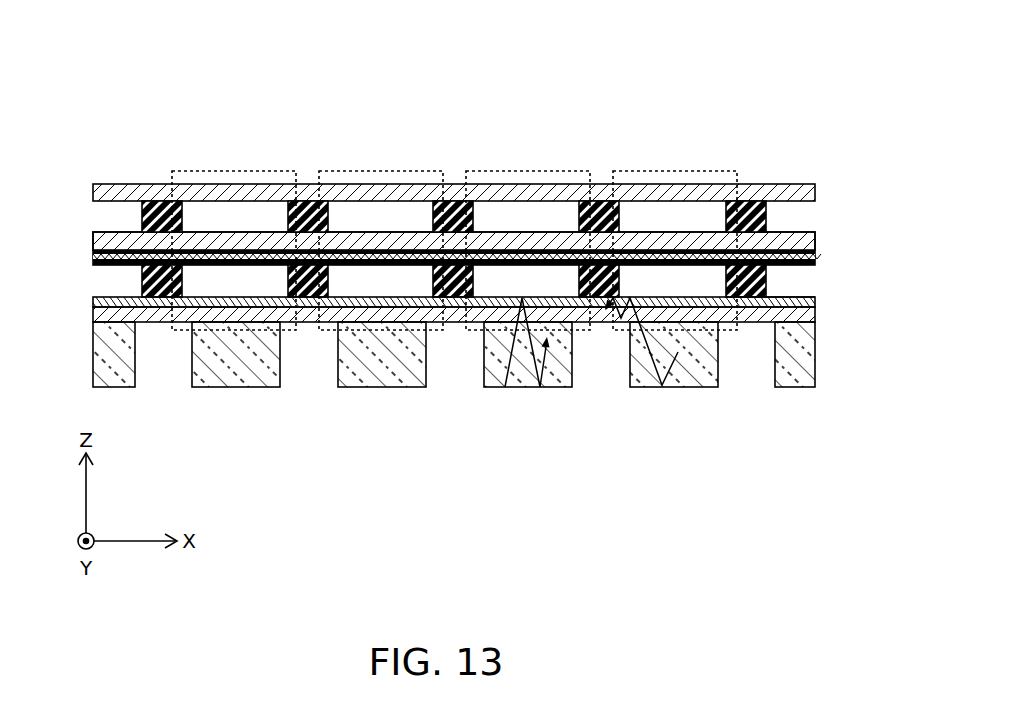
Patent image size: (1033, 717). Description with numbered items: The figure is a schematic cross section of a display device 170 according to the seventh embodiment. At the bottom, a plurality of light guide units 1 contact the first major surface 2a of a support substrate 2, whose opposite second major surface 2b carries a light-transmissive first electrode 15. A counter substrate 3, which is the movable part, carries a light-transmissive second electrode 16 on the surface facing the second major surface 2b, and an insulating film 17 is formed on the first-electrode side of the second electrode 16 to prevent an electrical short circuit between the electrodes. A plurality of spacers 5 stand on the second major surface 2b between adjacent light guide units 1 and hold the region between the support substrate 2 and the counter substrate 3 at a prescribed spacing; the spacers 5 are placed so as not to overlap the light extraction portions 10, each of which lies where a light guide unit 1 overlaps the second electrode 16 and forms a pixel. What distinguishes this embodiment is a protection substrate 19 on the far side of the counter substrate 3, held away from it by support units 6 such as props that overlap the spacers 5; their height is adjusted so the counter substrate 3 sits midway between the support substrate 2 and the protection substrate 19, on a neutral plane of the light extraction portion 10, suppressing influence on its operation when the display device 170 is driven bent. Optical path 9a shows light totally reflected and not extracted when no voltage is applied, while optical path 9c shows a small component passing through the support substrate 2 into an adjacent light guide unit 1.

The display device 170 is at (714, 97).
The protection substrate 19 is at (105, 193).
The counter substrate 3 is at (121, 243).
The second electrode 16 is at (105, 243).
The insulating film 17 is at (96, 258).
The support unit 6 is at (156, 218).
The spacer 5 is at (153, 288).
The first electrode 15 is at (100, 302).
The support substrate 2 is at (104, 313).
The second major surface 2b is at (793, 298).
The first major surface 2a is at (788, 327).
The light extraction portion 10 is at (231, 171).
The light guide unit 1 is at (237, 368).
The optical path 9a is at (552, 388).
The optical path 9c is at (652, 357).